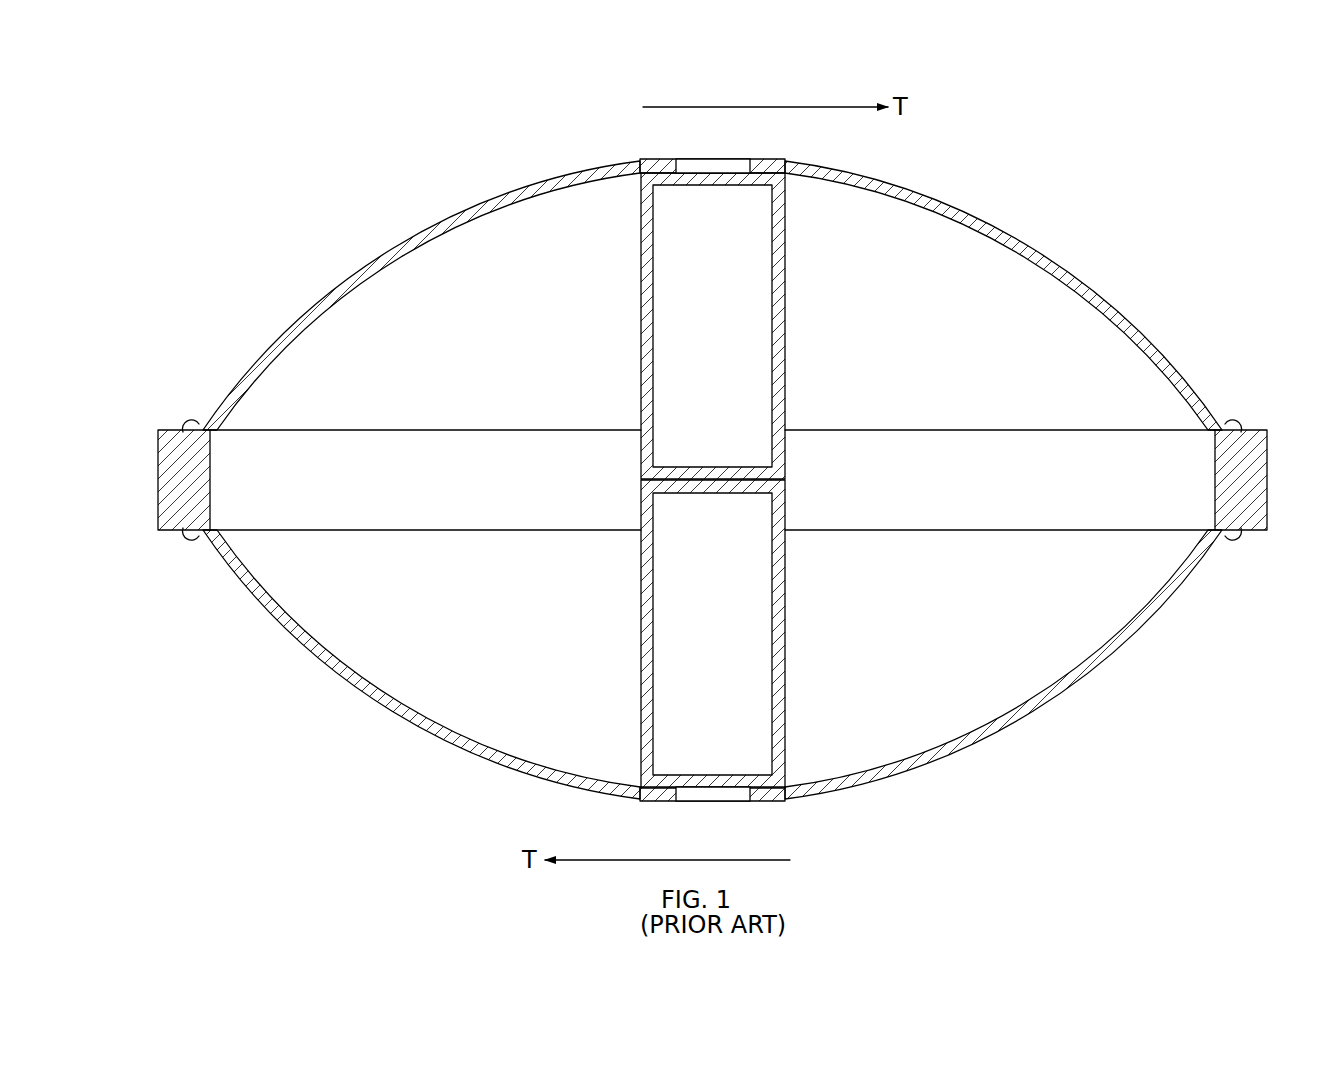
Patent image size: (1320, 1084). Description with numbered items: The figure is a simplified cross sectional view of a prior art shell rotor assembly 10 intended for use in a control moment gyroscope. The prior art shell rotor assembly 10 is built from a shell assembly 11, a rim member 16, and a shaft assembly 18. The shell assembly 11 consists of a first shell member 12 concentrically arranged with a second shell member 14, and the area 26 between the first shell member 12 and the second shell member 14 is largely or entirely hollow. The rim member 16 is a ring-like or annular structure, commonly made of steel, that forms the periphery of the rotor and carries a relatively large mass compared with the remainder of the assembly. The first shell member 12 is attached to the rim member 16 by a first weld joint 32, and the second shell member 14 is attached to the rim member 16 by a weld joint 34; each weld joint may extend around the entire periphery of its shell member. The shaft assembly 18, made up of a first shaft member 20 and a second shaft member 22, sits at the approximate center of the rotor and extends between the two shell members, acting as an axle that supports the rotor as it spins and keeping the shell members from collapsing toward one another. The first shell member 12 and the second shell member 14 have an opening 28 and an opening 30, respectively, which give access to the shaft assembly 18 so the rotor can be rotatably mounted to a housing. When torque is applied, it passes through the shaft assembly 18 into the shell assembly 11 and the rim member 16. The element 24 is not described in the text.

The prior art shell rotor assembly 10 is at (1122, 226).
The shell assembly 11 is at (502, 178).
The first shell member 12 is at (480, 297).
The second shell member 14 is at (483, 668).
The rim member 16 is at (158, 470).
The shaft assembly 18 is at (632, 362).
The first shaft member 20 is at (641, 407).
The second shaft member 22 is at (641, 553).
The cross bar 24 is at (452, 520).
The area 26 is at (878, 343).
The opening 28 is at (728, 158).
The opening 30 is at (712, 802).
The first weld joint 32 is at (190, 424).
The weld joint 34 is at (190, 538).